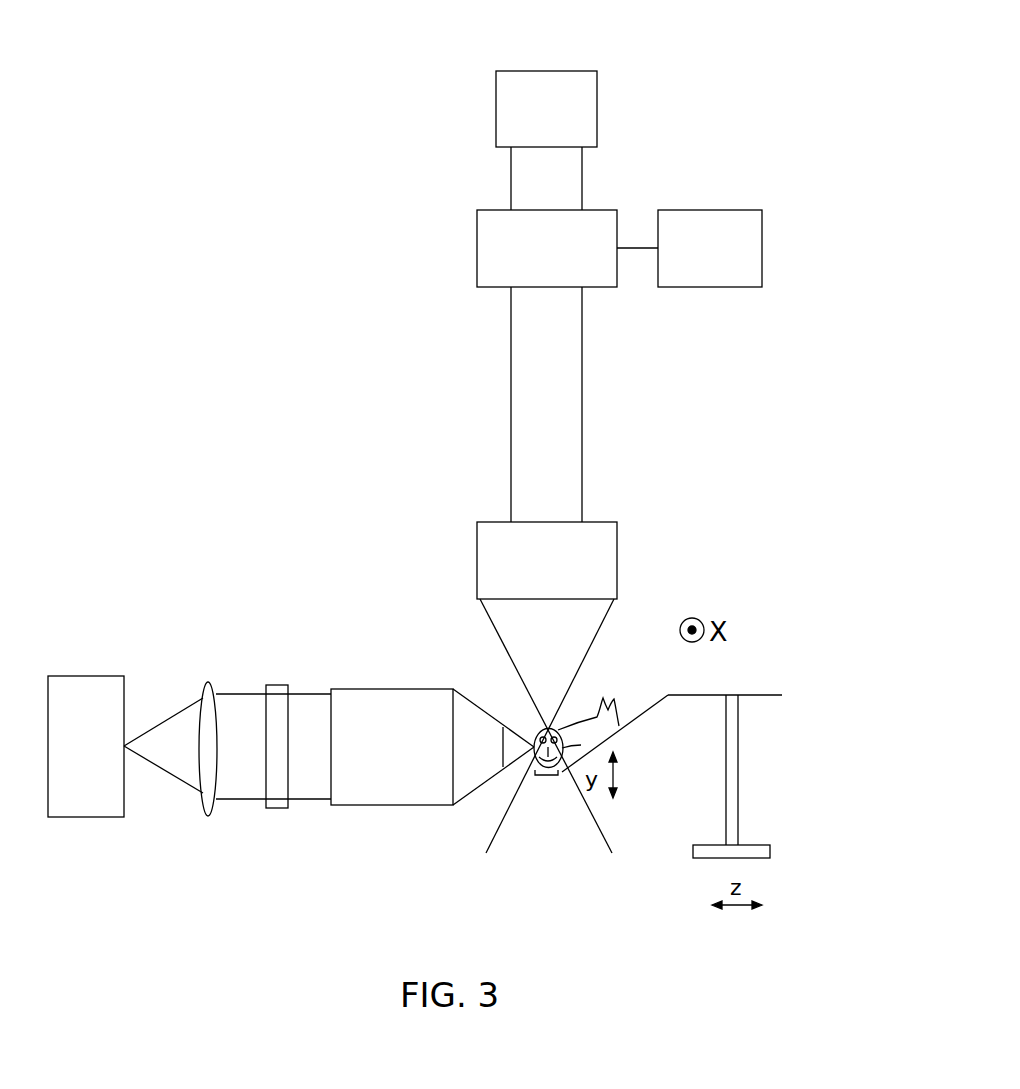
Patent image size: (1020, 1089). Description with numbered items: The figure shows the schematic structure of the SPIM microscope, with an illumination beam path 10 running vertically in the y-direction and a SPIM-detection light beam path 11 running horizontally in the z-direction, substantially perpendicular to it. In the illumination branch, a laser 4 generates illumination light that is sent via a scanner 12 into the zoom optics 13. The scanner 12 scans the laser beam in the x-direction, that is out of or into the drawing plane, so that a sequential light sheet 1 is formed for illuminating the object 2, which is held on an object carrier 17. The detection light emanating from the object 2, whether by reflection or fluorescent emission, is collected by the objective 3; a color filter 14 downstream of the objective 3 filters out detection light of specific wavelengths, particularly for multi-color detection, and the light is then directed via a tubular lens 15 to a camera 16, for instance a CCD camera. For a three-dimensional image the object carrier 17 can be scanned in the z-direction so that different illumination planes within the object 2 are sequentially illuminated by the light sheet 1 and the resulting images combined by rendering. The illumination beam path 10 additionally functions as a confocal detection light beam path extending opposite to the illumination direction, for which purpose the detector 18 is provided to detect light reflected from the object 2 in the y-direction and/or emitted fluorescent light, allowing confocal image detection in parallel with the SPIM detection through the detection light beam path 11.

The light sheet 1 is at (532, 797).
The object 2 is at (600, 713).
The objective 3 is at (387, 697).
The laser 4 is at (708, 210).
The illumination beam path 10 is at (770, 395).
The SPIM-detection light beam path 11 is at (198, 865).
The scanner 12 is at (477, 248).
The zoom optics 13 is at (477, 557).
The color filter 14 is at (278, 697).
The tubular lens 15 is at (209, 682).
The camera 16 is at (87, 676).
The object carrier 17 is at (758, 695).
The detector 18 is at (548, 71).